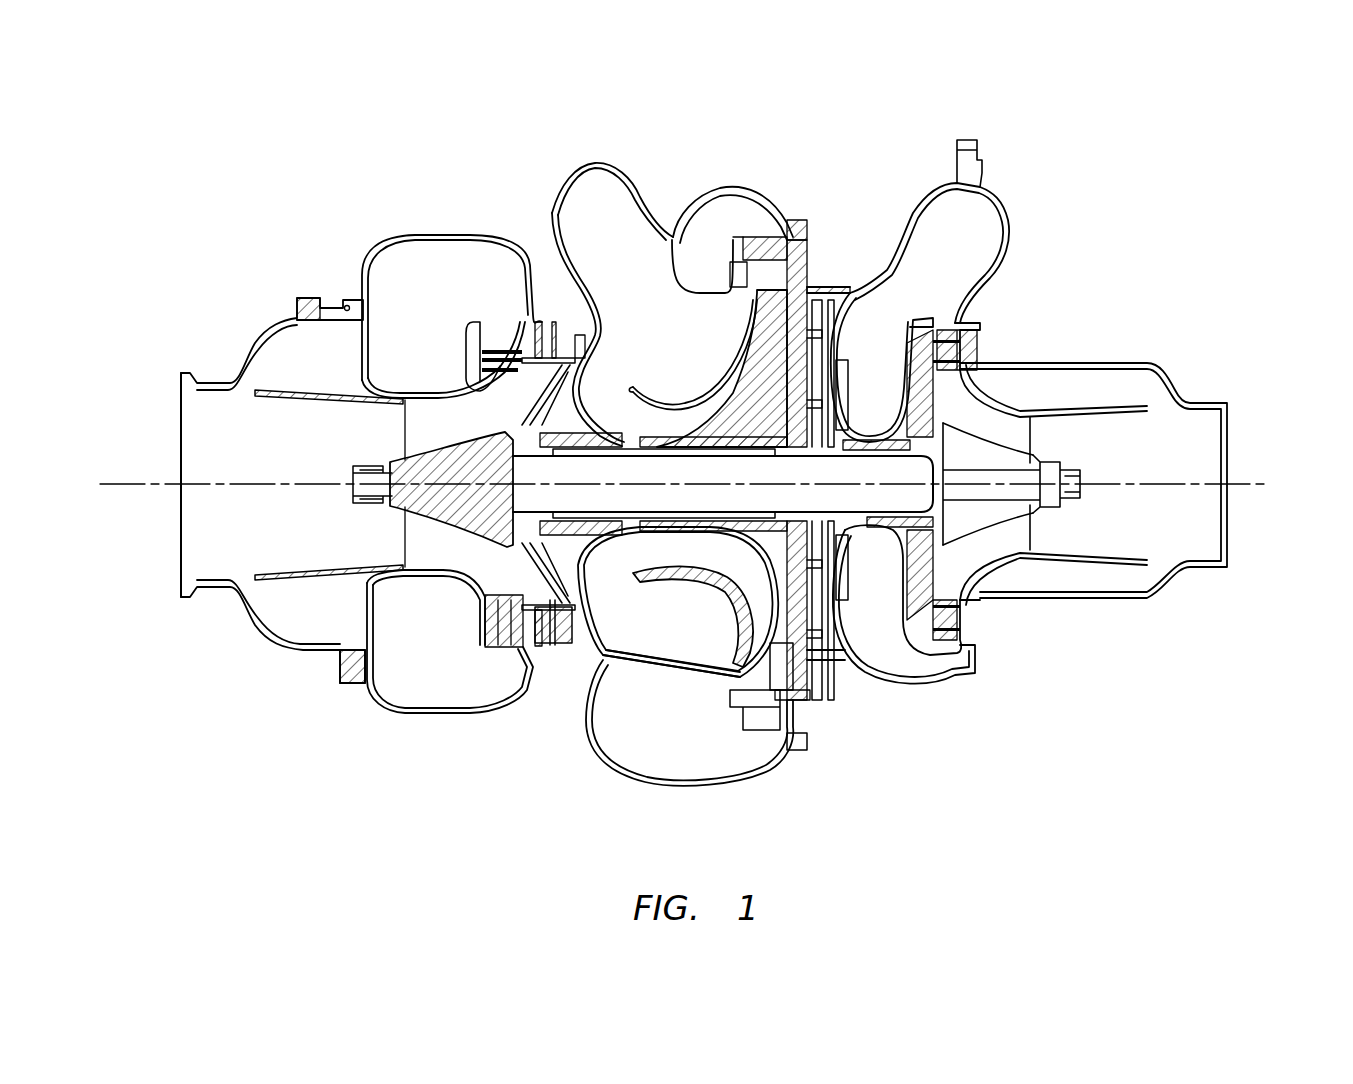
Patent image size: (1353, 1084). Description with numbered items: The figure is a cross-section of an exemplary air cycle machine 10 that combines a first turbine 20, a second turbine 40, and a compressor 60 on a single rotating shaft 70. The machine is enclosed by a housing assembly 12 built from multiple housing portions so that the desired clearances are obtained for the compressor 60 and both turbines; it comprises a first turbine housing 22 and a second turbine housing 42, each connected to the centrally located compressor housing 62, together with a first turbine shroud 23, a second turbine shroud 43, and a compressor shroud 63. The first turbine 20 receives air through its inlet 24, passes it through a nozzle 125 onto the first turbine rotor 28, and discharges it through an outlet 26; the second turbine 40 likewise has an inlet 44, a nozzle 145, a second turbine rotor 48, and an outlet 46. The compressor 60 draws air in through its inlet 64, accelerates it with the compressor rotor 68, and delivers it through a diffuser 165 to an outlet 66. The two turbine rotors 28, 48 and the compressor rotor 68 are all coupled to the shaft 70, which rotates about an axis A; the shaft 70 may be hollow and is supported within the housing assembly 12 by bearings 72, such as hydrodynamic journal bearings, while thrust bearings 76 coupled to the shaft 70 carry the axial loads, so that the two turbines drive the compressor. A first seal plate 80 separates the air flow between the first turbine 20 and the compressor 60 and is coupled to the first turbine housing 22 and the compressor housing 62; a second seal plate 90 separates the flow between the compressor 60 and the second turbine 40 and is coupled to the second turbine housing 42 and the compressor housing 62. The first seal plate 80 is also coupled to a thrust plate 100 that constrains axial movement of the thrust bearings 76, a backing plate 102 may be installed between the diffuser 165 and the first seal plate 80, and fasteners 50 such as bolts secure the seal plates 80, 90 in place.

The air cycle machine 10 is at (1137, 195).
The housing assembly 12 is at (333, 154).
The first turbine 20 is at (1100, 312).
The first turbine housing 22 is at (973, 174).
The first turbine shroud 23 is at (1128, 405).
The inlet 24 is at (992, 222).
The outlet 26 is at (1215, 430).
The first turbine rotor 28 is at (1015, 527).
The second turbine 40 is at (351, 800).
The second turbine housing 42 is at (366, 688).
The second turbine shroud 43 is at (292, 570).
The inlet 44 is at (442, 250).
The outlet 46 is at (170, 431).
The second turbine rotor 48 is at (430, 420).
The fasteners 50 is at (787, 742).
The compressor 60 is at (858, 145).
The compressor housing 62 is at (658, 215).
The compressor shroud 63 is at (680, 396).
The inlet 64 is at (600, 185).
The outlet 66 is at (683, 758).
The compressor rotor 68 is at (722, 405).
The shaft 70 is at (705, 525).
The bearings 72 is at (545, 428).
The thrust bearings 76 is at (820, 533).
The first seal plate 80 is at (795, 672).
The second seal plate 90 is at (562, 636).
The thrust plate 100 is at (817, 593).
The backing plate 102 is at (838, 327).
The nozzle 125 is at (977, 343).
The nozzle 145 is at (490, 643).
The diffuser 165 is at (767, 722).
The axis A is at (1255, 492).